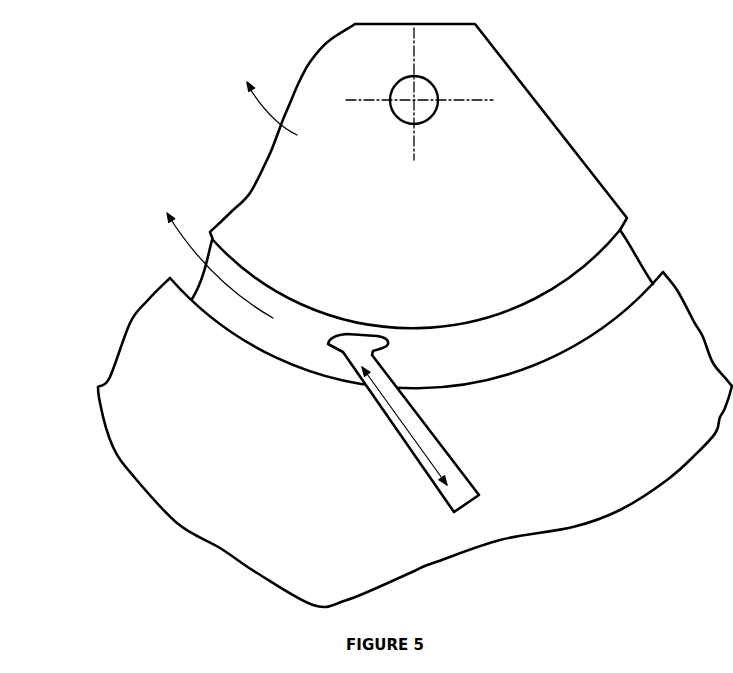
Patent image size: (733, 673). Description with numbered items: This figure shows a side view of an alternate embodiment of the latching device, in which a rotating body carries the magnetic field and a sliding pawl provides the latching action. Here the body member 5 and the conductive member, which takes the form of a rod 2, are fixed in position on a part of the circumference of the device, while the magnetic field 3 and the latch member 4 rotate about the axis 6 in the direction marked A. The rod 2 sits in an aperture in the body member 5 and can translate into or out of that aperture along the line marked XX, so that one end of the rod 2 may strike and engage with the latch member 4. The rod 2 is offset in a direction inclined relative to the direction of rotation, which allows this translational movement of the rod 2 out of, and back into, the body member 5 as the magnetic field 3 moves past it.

The rod 2 is at (325, 347).
The magnetic field 3 is at (422, 280).
The latch member 4 is at (387, 176).
The body member 5 is at (167, 380).
The axis 6 is at (513, 100).